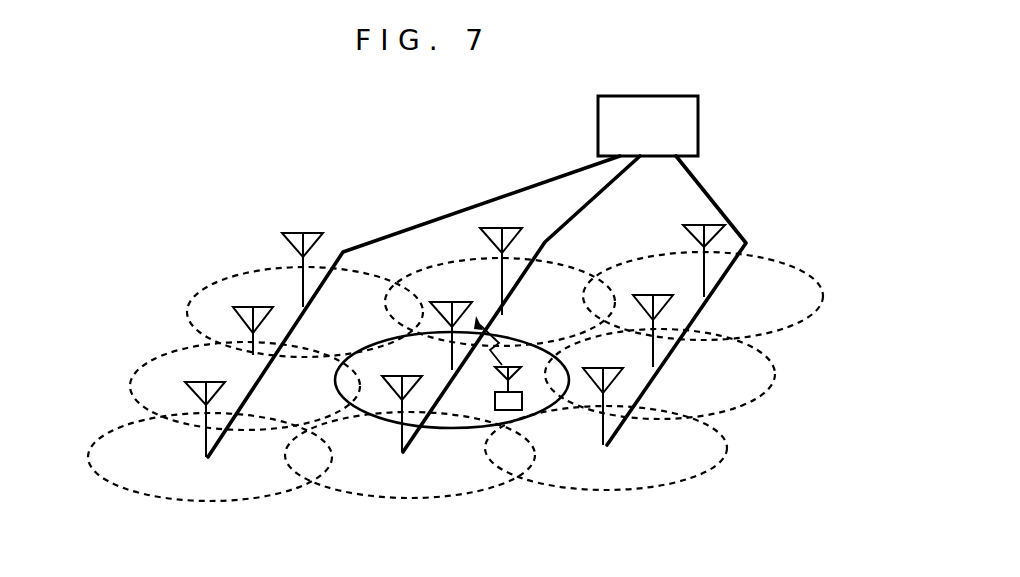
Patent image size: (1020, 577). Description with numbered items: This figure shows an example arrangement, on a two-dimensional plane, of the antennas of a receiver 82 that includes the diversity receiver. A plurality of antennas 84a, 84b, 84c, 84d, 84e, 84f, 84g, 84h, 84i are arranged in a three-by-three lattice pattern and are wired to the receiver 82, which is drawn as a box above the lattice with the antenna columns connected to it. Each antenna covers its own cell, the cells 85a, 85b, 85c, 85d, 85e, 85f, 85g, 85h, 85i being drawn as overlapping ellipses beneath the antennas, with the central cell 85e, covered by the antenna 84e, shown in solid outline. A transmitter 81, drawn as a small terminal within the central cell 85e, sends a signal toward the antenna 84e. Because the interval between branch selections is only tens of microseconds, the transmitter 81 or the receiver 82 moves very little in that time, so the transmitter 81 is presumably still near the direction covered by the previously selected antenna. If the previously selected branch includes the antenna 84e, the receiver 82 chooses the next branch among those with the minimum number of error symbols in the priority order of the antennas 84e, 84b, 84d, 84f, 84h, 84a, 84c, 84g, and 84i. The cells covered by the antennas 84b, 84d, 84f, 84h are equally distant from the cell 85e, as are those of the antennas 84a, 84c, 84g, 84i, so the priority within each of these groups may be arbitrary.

The transmitter 81 is at (513, 410).
The receiver 82 is at (598, 125).
The antenna 84a is at (295, 233).
The antenna 84b is at (495, 228).
The antenna 84c is at (716, 222).
The antenna 84d is at (237, 307).
The antenna 84e is at (440, 302).
The antenna 84f is at (663, 307).
The antenna 84g is at (185, 388).
The antenna 84h is at (390, 380).
The antenna 84i is at (613, 380).
The cell 85a is at (305, 295).
The cell 85b is at (501, 283).
The cell 85c is at (709, 283).
The cell 85d is at (236, 375).
The cell 85e is at (462, 427).
The cell 85f is at (682, 374).
The cell 85g is at (210, 484).
The cell 85h is at (410, 480).
The cell 85i is at (606, 468).